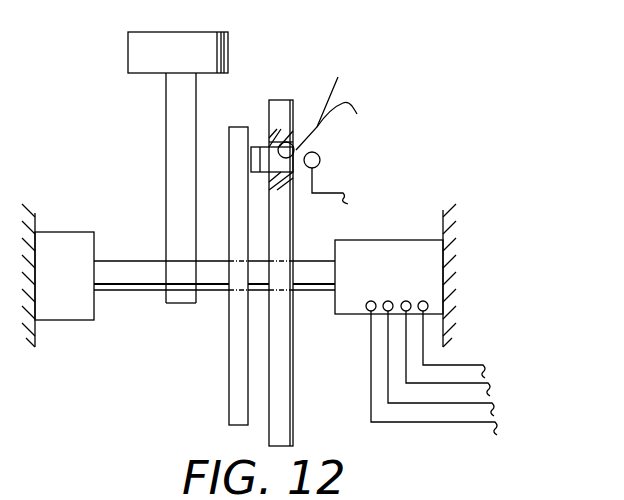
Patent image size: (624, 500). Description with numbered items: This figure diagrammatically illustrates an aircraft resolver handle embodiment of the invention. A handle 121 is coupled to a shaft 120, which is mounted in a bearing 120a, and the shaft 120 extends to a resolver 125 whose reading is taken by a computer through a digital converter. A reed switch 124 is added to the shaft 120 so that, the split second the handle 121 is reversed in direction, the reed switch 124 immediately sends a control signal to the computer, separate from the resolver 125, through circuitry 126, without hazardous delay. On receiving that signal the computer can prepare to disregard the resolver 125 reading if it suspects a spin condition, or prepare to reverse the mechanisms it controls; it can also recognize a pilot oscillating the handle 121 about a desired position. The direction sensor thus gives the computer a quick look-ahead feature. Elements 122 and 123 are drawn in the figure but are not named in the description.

The shaft 120 is at (147, 279).
The bearing 120a is at (110, 210).
The handle 121 is at (134, 52).
The slip ring bearing block 122 is at (272, 157).
The brush 123 is at (338, 77).
The reed switch 124 is at (320, 159).
The resolver 125 is at (352, 305).
The circuitry 126 is at (502, 392).